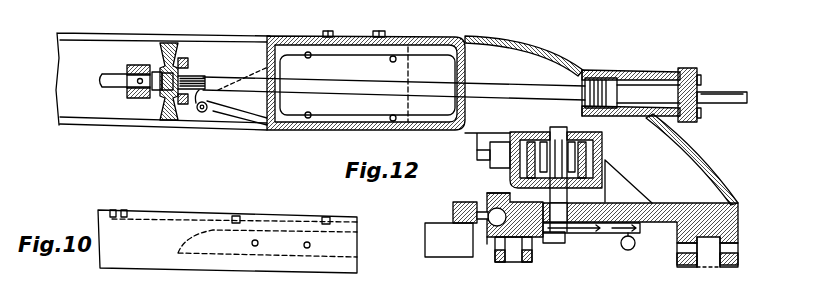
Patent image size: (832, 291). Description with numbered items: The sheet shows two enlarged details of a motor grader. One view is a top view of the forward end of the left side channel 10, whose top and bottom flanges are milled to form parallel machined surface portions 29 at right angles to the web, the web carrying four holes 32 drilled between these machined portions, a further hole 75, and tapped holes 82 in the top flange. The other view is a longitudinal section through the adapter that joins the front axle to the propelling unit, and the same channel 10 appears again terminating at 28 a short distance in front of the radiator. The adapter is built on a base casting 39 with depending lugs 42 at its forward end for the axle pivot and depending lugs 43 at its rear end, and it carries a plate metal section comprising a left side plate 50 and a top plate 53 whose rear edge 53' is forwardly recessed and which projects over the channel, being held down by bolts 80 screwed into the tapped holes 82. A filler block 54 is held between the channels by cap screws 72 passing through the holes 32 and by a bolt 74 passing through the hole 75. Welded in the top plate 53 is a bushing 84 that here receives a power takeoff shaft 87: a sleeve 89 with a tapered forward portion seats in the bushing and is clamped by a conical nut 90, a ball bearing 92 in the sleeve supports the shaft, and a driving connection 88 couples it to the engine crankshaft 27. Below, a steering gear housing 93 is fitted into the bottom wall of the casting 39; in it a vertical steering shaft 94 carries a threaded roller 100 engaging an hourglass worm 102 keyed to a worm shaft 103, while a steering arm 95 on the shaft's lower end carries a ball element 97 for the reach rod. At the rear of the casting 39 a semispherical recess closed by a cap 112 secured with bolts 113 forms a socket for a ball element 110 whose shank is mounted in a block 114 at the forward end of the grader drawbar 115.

In FIG. 12, the side channel 10 is at (226, 35).
In FIG. 10, the side channel 10 is at (176, 210).
In FIG. 12, the crankshaft 27 is at (107, 90).
In FIG. 12, the terminal point of side channels 28 is at (411, 74).
In FIG. 10, the machined surface portion 29 is at (358, 245).
In FIG. 10, the holes 32 is at (322, 216).
In FIG. 12, the casting 39 is at (738, 214).
In FIG. 12, the depending lugs 42 is at (718, 262).
In FIG. 12, the depending lugs 43 is at (511, 263).
In FIG. 12, the side plate 50 is at (702, 168).
In FIG. 12, the top plate 53 is at (528, 56).
In FIG. 12, the rear edge of top plate 53' is at (366, 71).
In FIG. 12, the filler block 54 is at (433, 133).
In FIG. 12, the cap screws 72 is at (310, 58).
In FIG. 12, the bolt 74 is at (203, 113).
In FIG. 10, the hole 75 is at (120, 210).
In FIG. 12, the bolts 80 is at (334, 31).
In FIG. 10, the tapped holes 82 is at (295, 248).
In FIG. 12, the bushing 84 is at (652, 72).
In FIG. 12, the power takeoff shaft 87 is at (499, 86).
In FIG. 12, the driving connection 88 is at (200, 74).
In FIG. 12, the sleeve 89 is at (685, 70).
In FIG. 12, the nut 90 is at (585, 96).
In FIG. 12, the ball bearing 92 is at (699, 89).
In FIG. 12, the steering gear housing 93 is at (598, 187).
In FIG. 12, the steering shaft 94 is at (536, 198).
In FIG. 12, the steering arm 95 is at (595, 233).
In FIG. 12, the ball element 97 is at (628, 250).
In FIG. 12, the threaded roller 100 is at (567, 130).
In FIG. 12, the hourglass worm 102 is at (524, 142).
In FIG. 12, the worm shaft 103 is at (493, 155).
In FIG. 12, the ball element 110 is at (489, 210).
In FIG. 12, the cap 112 is at (490, 198).
In FIG. 12, the bolts 113 is at (484, 248).
In FIG. 12, the block 114 is at (455, 203).
In FIG. 12, the drawbar 115 is at (440, 258).